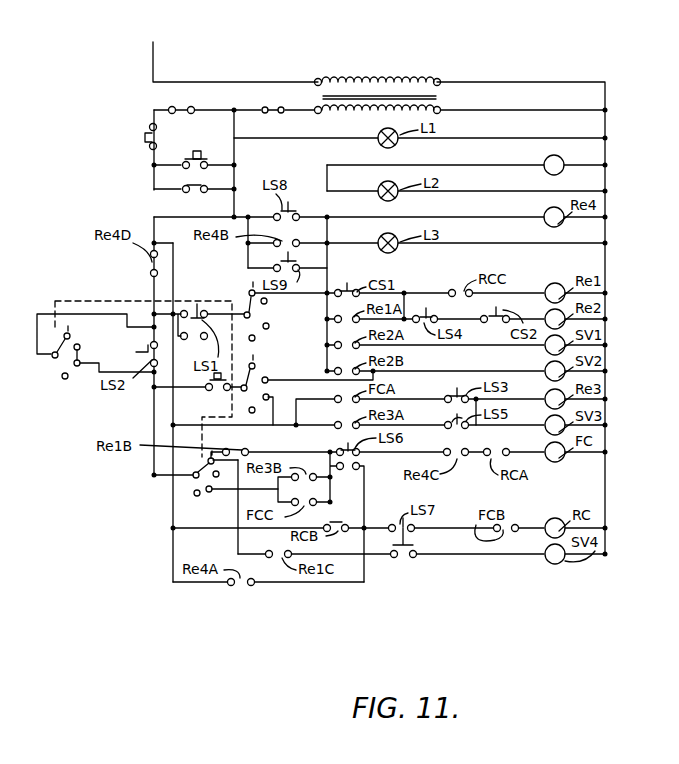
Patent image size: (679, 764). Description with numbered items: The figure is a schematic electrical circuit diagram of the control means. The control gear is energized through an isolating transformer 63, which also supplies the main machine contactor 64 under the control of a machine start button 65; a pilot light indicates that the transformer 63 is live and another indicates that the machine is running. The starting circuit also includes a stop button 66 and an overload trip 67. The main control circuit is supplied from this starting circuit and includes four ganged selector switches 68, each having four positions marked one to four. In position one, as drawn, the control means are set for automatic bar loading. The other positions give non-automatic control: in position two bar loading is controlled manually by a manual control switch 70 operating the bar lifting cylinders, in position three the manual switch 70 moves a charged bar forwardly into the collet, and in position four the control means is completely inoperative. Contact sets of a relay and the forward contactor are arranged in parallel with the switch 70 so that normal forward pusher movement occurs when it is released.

The isolating transformer 63 is at (402, 98).
The main machine contactor 64 is at (562, 163).
The machine start button 65 is at (190, 153).
The stop button 66 is at (145, 139).
The overload trip 67 is at (182, 108).
The ganged selector switches 68 is at (63, 365).
The manual control switch 70 is at (214, 390).